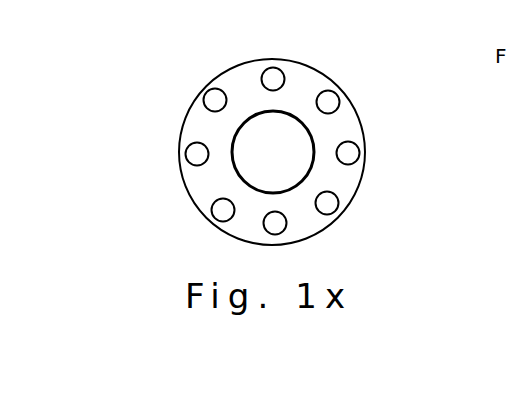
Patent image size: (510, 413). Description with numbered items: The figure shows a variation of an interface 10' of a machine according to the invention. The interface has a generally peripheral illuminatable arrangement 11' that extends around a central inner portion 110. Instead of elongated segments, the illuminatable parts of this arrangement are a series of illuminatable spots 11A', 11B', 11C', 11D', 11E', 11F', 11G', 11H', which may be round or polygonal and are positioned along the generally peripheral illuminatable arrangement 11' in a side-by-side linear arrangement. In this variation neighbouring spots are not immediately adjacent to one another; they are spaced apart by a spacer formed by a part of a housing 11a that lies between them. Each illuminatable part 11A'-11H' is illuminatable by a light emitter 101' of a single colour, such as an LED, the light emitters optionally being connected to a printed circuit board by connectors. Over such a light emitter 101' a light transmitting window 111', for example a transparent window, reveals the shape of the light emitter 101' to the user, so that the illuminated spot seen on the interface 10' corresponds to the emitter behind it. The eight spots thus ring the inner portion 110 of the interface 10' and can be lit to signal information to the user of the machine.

The mounting disc assembly 10' is at (248, 141).
The generally peripheral illuminatable arrangement 11' is at (256, 152).
The part of a housing 11a is at (203, 125).
The inner portion 110 is at (265, 163).
The light emitter 101' is at (324, 66).
The light transmitting window 111' is at (386, 183).
The illuminatable spot 11A' is at (374, 104).
The illuminatable spot 11B' is at (395, 183).
The illuminatable spot 11C' is at (374, 222).
The illuminatable spot 11D' is at (319, 239).
The illuminatable spot 11E' is at (180, 231).
The illuminatable spot 11F' is at (148, 157).
The illuminatable spot 11G' is at (188, 79).
The illuminatable spot 11H' is at (251, 54).